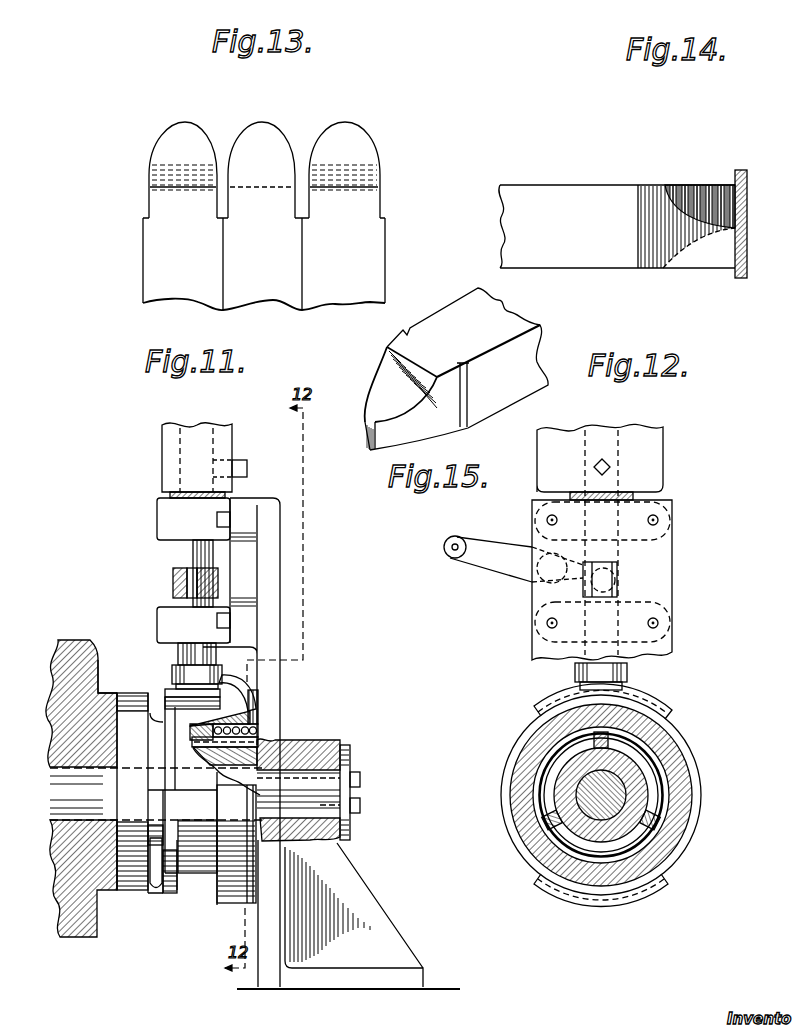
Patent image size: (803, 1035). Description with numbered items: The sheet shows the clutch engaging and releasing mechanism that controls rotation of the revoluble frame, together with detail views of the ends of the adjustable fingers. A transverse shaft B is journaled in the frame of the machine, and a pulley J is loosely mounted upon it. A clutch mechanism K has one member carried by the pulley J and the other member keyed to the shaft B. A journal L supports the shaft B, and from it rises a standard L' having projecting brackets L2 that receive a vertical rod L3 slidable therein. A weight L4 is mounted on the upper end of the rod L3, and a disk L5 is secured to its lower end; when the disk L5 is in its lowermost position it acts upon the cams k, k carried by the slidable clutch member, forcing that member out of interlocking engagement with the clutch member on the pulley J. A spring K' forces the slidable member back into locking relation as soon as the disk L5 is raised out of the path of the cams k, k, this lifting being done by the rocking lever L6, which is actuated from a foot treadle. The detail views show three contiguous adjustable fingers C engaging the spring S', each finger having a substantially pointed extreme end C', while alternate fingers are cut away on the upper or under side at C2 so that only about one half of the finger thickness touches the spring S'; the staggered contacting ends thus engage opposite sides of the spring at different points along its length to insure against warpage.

In FIG. 13, the adjustable fingers C is at (264, 264).
In FIG. 14, the adjustable fingers C is at (617, 210).
In FIG. 15, the adjustable fingers C is at (459, 369).
In FIG. 13, the pointed end of finger C' is at (264, 155).
In FIG. 14, the pointed end of finger C' is at (725, 206).
In FIG. 15, the pointed end of finger C' is at (356, 439).
In FIG. 13, the cut-away portion of finger C2 is at (375, 160).
In FIG. 14, the cut-away portion of finger C2 is at (722, 236).
In FIG. 15, the cut-away portion of finger C2 is at (401, 384).
In FIG. 14, the spring S' is at (756, 224).
In FIG. 11, the weight L4 is at (204, 460).
In FIG. 12, the weight L4 is at (600, 539).
In FIG. 11, the projecting brackets L2 is at (157, 618).
In FIG. 11, the vertical rod L3 is at (193, 557).
In FIG. 12, the vertical rod L3 is at (620, 553).
In FIG. 11, the rocking lever L6 is at (173, 583).
In FIG. 12, the rocking lever L6 is at (483, 563).
In FIG. 11, the standard L' is at (313, 742).
In FIG. 12, the standard L' is at (620, 580).
In FIG. 11, the disk L5 is at (172, 671).
In FIG. 12, the disk L5 is at (627, 672).
In FIG. 11, the pulley J is at (90, 665).
In FIG. 11, the cams k is at (232, 903).
In FIG. 12, the cams k is at (596, 905).
In FIG. 11, the spring K' is at (249, 718).
In FIG. 11, the transverse shaft B is at (141, 788).
In FIG. 12, the transverse shaft B is at (625, 787).
In FIG. 11, the clutch mechanism K is at (168, 814).
In FIG. 12, the clutch mechanism K is at (605, 795).
In FIG. 11, the journal L is at (292, 802).